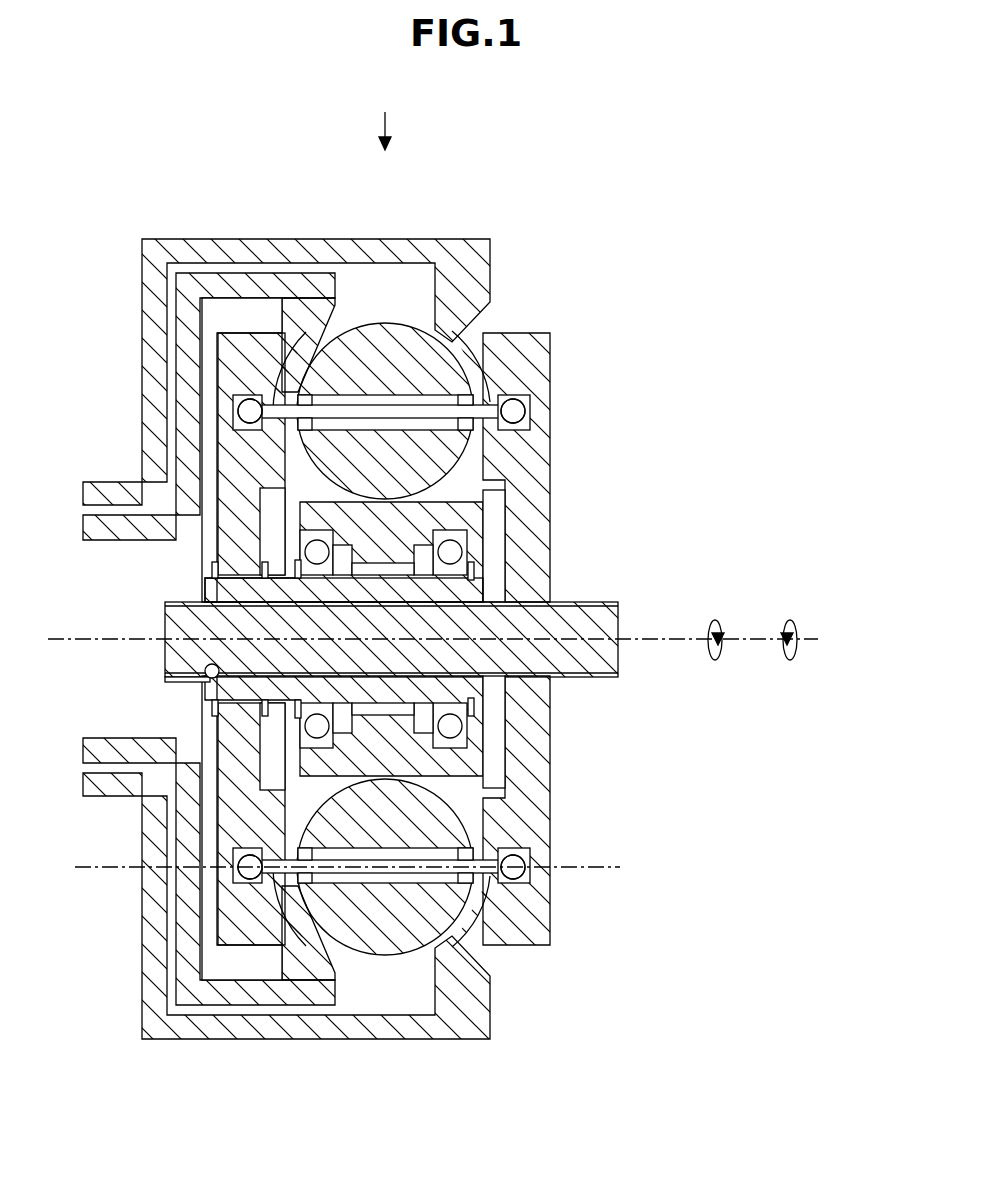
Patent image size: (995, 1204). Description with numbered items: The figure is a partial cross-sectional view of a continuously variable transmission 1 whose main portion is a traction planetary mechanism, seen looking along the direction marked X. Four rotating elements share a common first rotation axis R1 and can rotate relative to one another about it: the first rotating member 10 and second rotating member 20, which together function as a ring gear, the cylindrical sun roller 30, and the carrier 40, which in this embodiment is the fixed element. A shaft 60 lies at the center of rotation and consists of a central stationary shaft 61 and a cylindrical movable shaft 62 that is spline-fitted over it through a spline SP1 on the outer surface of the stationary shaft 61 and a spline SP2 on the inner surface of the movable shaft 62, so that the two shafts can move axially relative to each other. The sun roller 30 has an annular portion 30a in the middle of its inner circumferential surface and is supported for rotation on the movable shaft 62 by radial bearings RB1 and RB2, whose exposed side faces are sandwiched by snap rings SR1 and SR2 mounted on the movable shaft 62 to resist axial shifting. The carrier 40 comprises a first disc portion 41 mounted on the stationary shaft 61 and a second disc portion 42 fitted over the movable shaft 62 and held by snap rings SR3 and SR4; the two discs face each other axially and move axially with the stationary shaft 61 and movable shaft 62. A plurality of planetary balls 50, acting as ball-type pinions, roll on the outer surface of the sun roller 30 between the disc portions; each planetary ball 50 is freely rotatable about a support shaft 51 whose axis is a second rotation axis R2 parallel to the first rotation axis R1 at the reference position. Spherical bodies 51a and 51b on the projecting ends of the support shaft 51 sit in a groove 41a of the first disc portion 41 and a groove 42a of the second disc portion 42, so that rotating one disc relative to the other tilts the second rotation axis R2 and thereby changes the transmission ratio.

The continuously variable transmission 1 is at (577, 187).
The first rotating member 10 is at (457, 238).
The second rotating member 20 is at (340, 290).
The sun roller 30 is at (447, 497).
The annular portion 30a is at (486, 587).
The carrier 40 is at (527, 333).
The first disc portion 41 is at (540, 377).
The groove 41a is at (531, 412).
The second disc portion 42 is at (232, 378).
The groove 42a is at (236, 411).
The planetary ball 50 is at (395, 322).
The support shaft 51 is at (370, 405).
The spherical body 51a is at (523, 421).
The spherical body 51b is at (242, 420).
The shaft 60 is at (610, 694).
The stationary shaft 61 is at (588, 665).
The movable shaft 62 is at (462, 690).
The radial bearing RB1 is at (463, 542).
The radial bearing RB2 is at (303, 726).
The snap ring SR1 is at (474, 566).
The snap ring SR2 is at (297, 572).
The snap ring SR3 is at (262, 570).
The snap ring SR4 is at (212, 570).
The spline SP1 is at (178, 679).
The spline SP2 is at (205, 668).
The first rotation axis R1 is at (663, 639).
The second rotation axis R2 is at (590, 865).
The viewing direction X is at (384, 117).